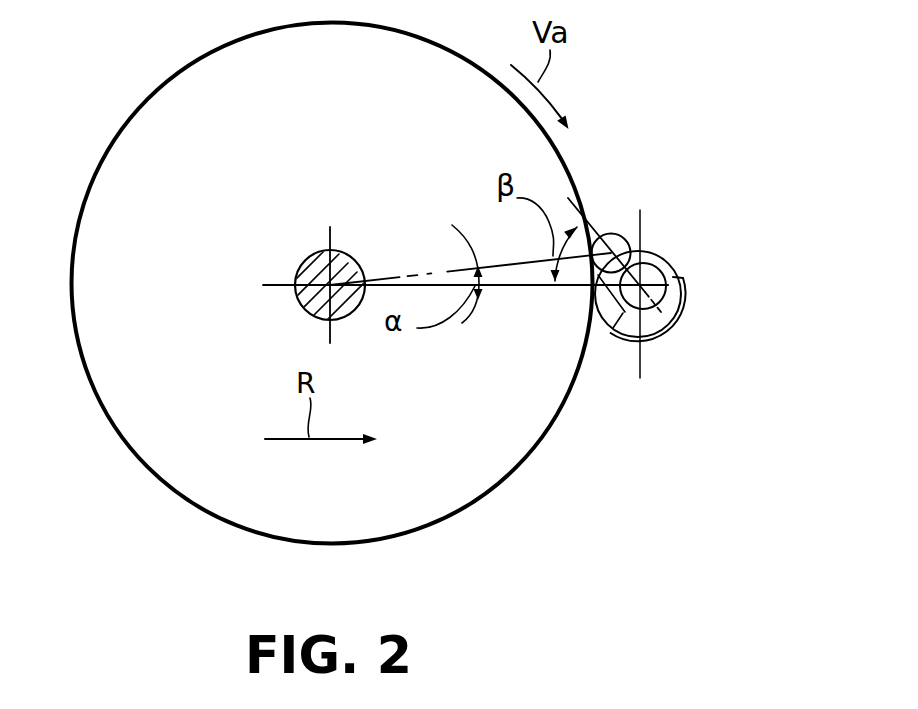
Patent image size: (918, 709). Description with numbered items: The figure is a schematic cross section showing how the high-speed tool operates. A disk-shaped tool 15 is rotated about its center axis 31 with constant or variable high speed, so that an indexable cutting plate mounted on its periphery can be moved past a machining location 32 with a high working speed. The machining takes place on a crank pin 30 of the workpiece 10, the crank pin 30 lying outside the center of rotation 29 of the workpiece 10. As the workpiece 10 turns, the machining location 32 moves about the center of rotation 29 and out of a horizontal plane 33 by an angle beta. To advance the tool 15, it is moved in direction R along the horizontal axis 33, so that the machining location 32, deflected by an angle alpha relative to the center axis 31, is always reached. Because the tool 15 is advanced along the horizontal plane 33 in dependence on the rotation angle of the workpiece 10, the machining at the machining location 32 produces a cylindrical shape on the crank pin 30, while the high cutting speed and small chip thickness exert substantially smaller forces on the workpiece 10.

The disk-shaped tool 15 is at (176, 130).
The center axis 31 is at (300, 302).
The horizontal plane 33 is at (507, 284).
The machining location 32 is at (617, 180).
The crank pin 30 is at (628, 240).
The workpiece 10 is at (697, 334).
The center of rotation 29 is at (661, 262).